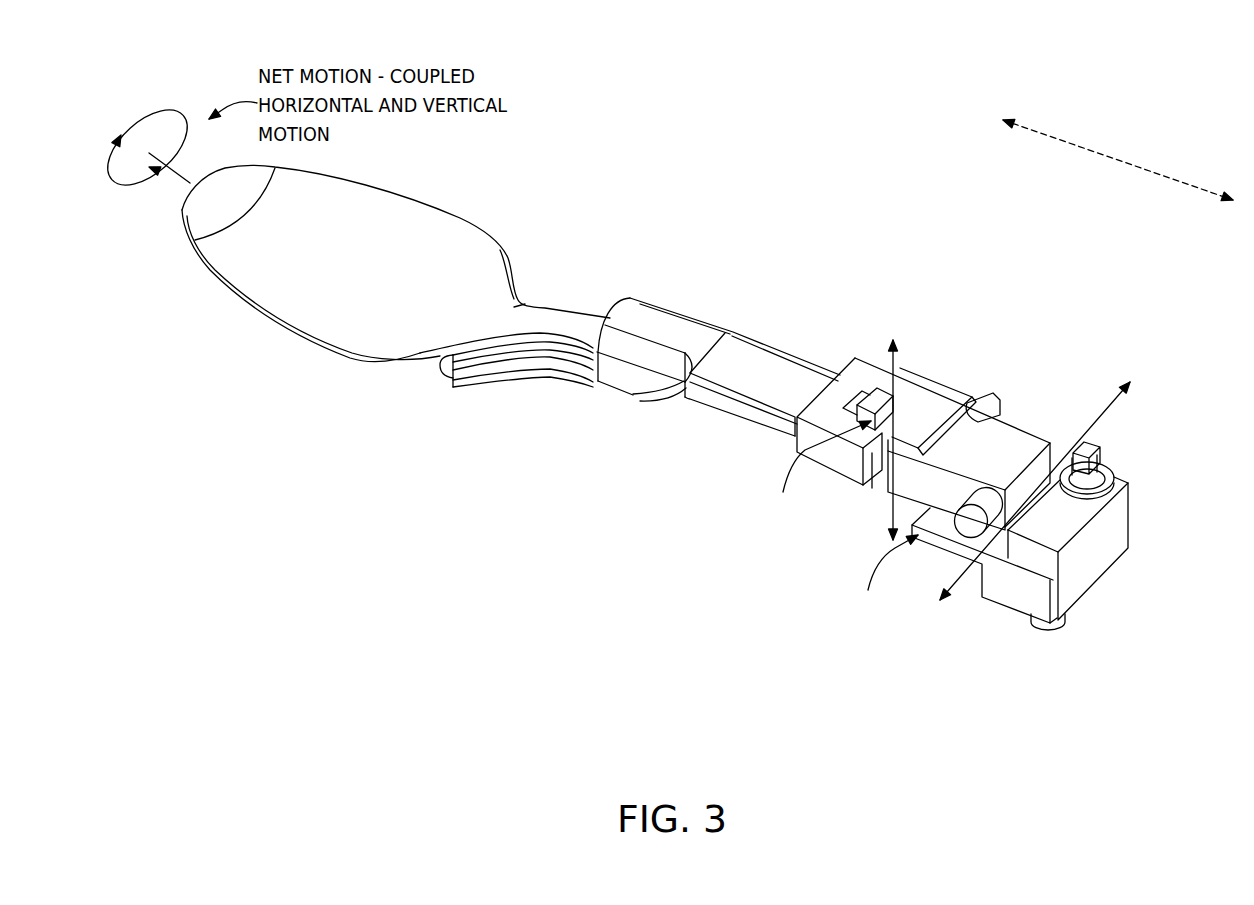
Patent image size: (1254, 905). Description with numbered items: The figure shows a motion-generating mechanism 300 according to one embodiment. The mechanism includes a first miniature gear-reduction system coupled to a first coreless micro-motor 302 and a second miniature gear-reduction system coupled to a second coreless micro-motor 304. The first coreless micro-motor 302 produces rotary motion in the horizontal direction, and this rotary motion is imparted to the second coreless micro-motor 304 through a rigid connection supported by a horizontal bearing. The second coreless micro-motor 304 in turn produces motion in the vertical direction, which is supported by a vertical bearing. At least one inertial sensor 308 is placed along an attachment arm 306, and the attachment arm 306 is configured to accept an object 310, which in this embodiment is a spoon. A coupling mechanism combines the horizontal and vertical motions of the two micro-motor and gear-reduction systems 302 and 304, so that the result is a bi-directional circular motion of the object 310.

The motion-generating mechanism 300 is at (1192, 744).
The first coreless micro-motor 302 is at (1095, 593).
The second coreless micro-motor 304 is at (1027, 419).
The attachment arm 306 is at (675, 422).
The inertial sensor 308 is at (565, 396).
The object 310 is at (278, 352).